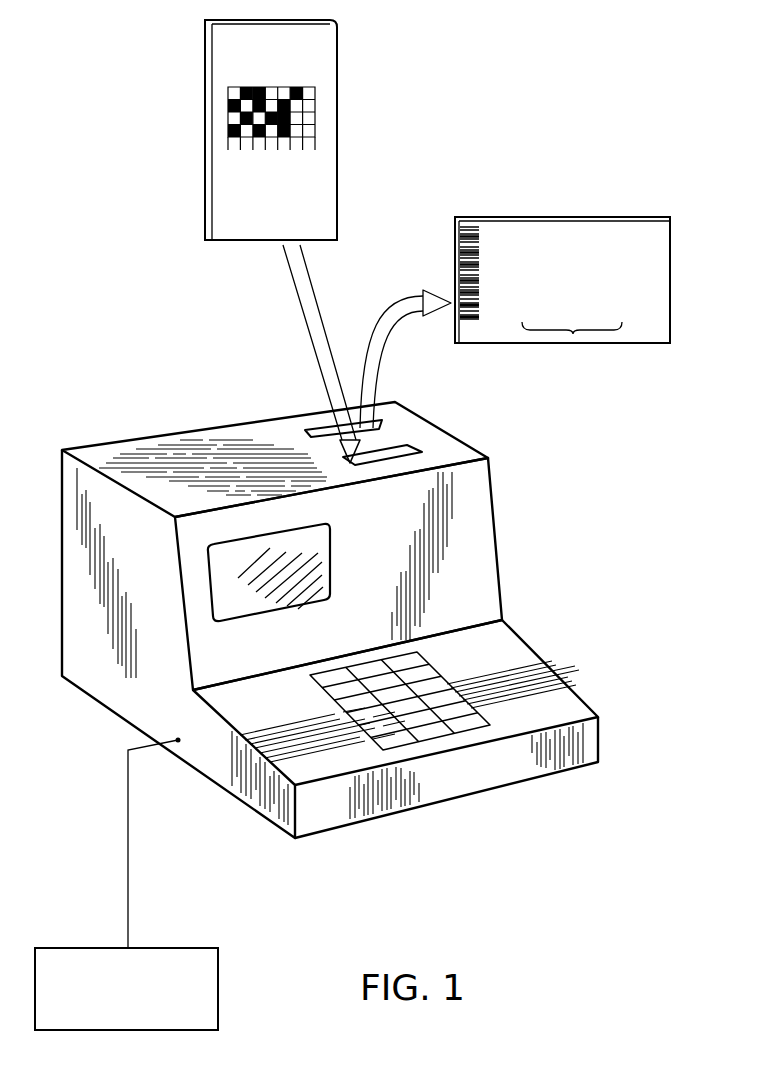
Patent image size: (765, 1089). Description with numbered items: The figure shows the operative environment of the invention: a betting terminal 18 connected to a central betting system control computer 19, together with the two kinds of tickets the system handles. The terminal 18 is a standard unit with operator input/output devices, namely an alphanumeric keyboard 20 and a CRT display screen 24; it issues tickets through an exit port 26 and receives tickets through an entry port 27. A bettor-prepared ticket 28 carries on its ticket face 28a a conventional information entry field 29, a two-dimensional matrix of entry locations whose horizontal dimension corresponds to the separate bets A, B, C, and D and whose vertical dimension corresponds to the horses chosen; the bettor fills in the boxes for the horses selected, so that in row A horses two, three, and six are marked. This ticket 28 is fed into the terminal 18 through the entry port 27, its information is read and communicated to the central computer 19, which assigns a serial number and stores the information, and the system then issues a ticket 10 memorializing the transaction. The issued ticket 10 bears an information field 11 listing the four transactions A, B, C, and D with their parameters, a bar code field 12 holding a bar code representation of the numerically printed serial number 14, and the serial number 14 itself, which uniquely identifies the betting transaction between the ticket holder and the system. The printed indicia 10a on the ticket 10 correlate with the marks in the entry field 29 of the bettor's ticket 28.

The ticket 10 is at (611, 216).
The printed combination indicia 10a is at (549, 222).
The information field 11 is at (573, 334).
The bar code field 12 is at (469, 222).
The serial number 14 is at (661, 334).
The terminal 18 is at (487, 553).
The central betting system control computer 19 is at (188, 948).
The alphanumeric keyboard 20 is at (470, 723).
The CRT display screen 24 is at (308, 582).
The exit port 26 is at (306, 428).
The entry port 27 is at (410, 447).
The ticket 28 is at (341, 47).
The ticket face 28a is at (328, 157).
The information entry field 29 is at (200, 88).